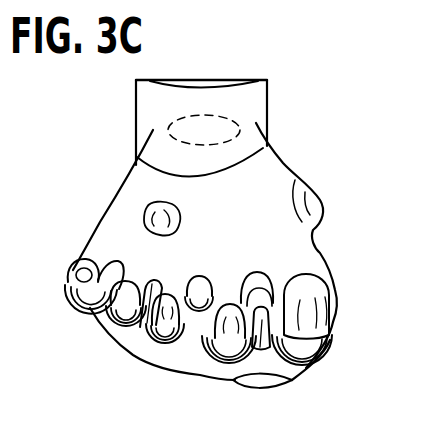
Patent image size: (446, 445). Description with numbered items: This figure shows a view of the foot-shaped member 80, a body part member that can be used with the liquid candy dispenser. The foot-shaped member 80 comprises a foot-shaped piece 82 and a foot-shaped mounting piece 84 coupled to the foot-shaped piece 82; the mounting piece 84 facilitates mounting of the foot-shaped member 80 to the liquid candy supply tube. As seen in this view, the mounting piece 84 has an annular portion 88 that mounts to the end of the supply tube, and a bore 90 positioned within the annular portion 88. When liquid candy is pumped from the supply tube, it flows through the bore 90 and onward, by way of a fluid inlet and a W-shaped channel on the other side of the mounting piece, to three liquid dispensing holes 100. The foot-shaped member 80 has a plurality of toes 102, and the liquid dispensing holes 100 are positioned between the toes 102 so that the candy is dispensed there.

The foot-shaped member 80 is at (68, 175).
The foot-shaped piece 82 is at (148, 363).
The foot-shaped mounting piece 84 is at (121, 189).
The annular portion 88 is at (258, 100).
The bore 90 is at (240, 137).
The liquid dispensing holes 100 is at (140, 312).
The toes 102 is at (322, 309).